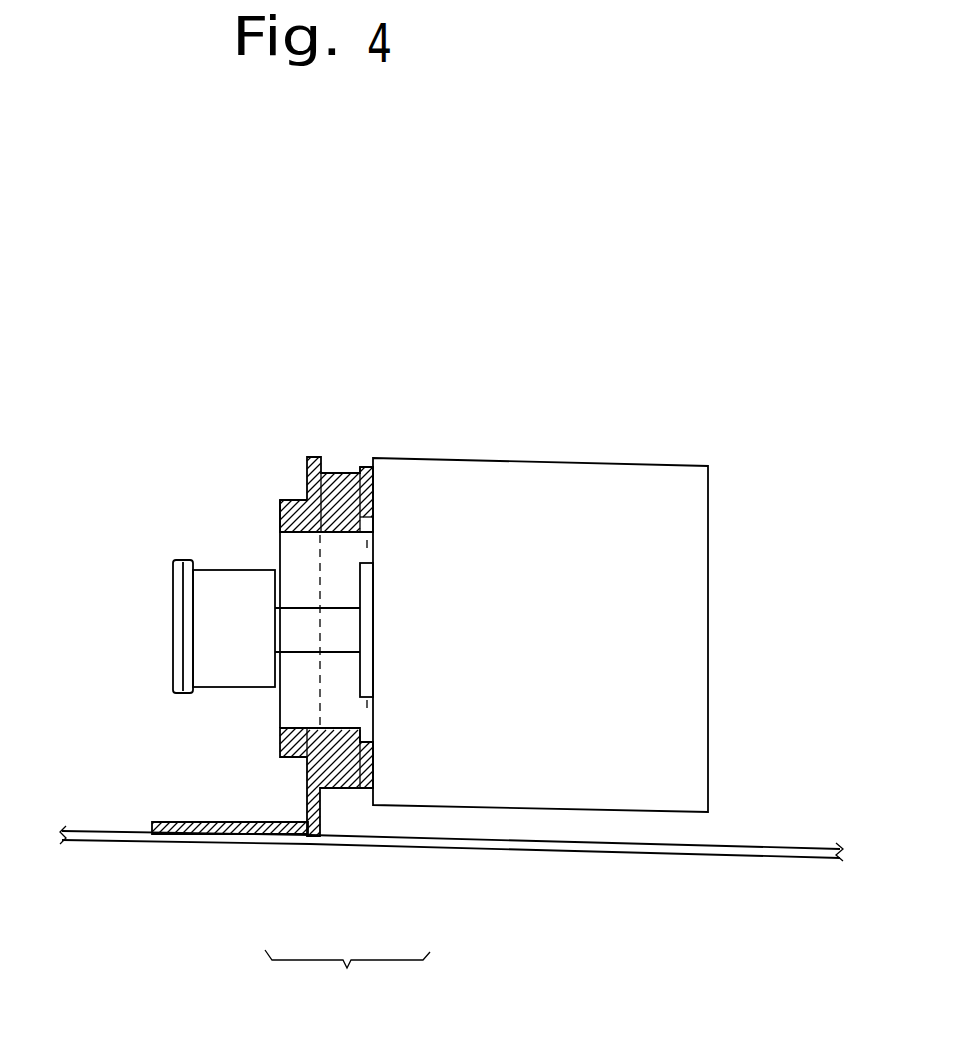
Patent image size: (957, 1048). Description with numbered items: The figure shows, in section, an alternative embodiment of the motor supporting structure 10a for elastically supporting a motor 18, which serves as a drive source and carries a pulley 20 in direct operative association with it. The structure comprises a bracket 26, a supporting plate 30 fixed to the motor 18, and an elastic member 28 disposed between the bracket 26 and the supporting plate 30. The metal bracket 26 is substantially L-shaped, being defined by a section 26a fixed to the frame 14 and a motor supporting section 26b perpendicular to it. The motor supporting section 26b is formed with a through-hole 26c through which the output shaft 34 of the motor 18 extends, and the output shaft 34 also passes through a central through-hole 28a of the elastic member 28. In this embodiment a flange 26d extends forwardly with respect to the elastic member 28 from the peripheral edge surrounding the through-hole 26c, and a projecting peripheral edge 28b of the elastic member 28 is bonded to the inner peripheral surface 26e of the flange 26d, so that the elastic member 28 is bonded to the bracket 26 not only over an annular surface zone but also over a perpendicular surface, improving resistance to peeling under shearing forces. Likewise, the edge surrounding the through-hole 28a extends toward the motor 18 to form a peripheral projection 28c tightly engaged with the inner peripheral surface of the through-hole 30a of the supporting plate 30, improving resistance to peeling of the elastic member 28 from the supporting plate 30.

The motor supporting structure 10a is at (298, 425).
The frame 14 is at (597, 845).
The motor 18 is at (582, 493).
The pulley 20 is at (212, 594).
The bracket 26 is at (347, 985).
The section fixed to the frame 26a is at (242, 833).
The motor supporting section 26b is at (320, 807).
The through-hole 26c is at (295, 698).
The flange 26d is at (287, 500).
The inner peripheral surface 26e is at (282, 728).
The elastic member 28 is at (336, 473).
The through-hole 28a is at (335, 730).
The projecting peripheral edge 28b is at (278, 520).
The peripheral projection 28c is at (372, 742).
The supporting plate 30 is at (373, 497).
The through-hole 30a is at (373, 540).
The output shaft 34 is at (345, 623).